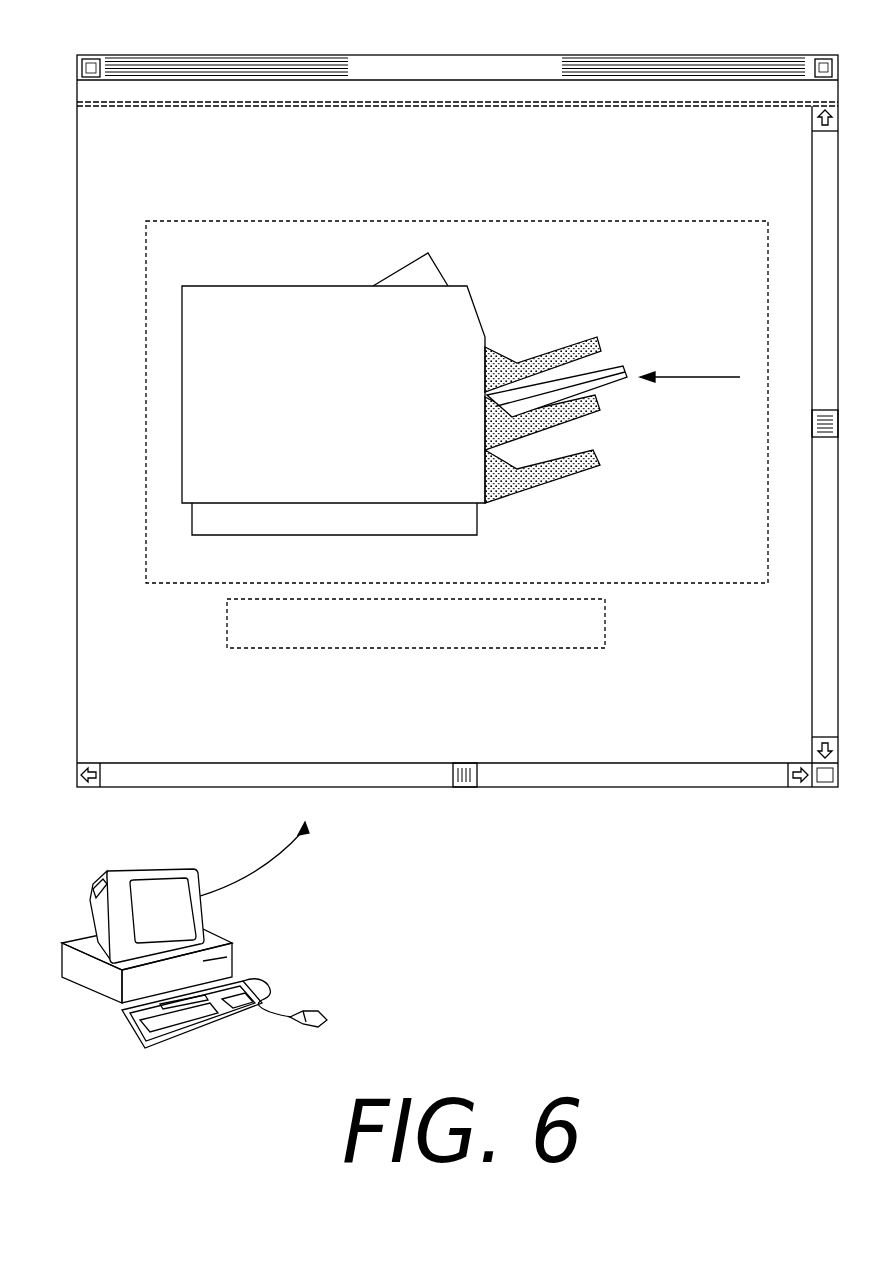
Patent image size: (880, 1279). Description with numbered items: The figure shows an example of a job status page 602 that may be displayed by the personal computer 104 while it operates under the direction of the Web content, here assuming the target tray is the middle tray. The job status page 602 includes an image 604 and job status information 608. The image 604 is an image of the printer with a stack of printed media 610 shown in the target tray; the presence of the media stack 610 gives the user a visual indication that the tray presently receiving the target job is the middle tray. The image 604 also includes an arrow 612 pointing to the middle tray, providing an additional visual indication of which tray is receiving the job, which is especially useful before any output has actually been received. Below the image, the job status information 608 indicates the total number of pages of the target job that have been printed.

The job status page 602 is at (295, 54).
The image 604 is at (677, 220).
The job status information 608 is at (522, 648).
The stack of printed media 610 is at (622, 366).
The arrow 612 is at (667, 380).
The personal computer (PC) 104 is at (102, 995).